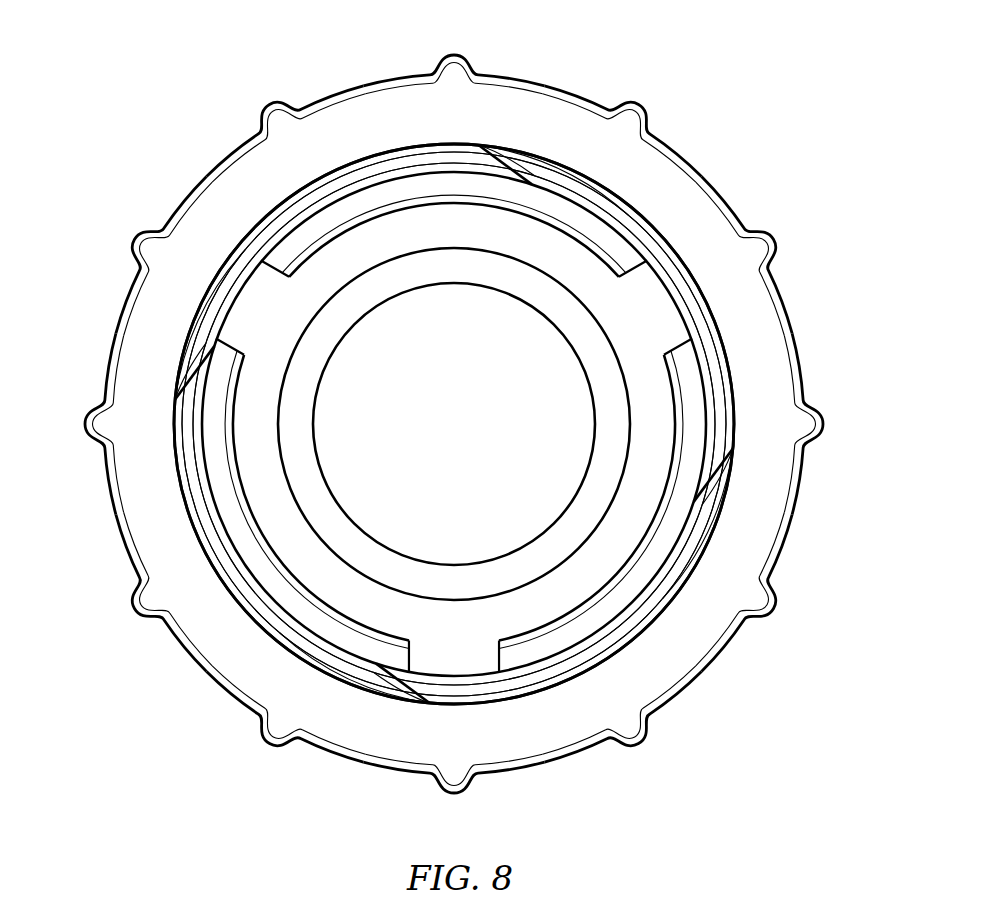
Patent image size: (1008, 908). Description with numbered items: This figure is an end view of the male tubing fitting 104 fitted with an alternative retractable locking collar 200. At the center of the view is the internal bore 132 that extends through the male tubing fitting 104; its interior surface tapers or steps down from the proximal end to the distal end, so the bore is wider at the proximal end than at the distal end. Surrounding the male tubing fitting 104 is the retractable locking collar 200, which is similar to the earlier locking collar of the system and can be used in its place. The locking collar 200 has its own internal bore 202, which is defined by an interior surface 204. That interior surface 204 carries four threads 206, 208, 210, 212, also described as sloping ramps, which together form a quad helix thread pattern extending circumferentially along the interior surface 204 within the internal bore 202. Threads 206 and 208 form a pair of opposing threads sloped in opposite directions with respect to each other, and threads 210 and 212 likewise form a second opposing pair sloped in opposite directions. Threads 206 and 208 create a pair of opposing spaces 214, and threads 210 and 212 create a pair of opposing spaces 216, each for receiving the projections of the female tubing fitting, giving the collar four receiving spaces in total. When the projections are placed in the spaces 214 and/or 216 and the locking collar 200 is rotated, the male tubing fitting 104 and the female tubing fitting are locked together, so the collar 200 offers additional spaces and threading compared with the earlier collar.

The retractable locking collar 200 is at (594, 97).
The internal bore 202 is at (656, 435).
The interior surface 204 is at (703, 545).
The thread 206 is at (673, 268).
The thread 208 is at (253, 602).
The thread 210 is at (303, 205).
The thread 212 is at (647, 610).
The spaces 214 is at (702, 320).
The spaces 216 is at (360, 172).
The male tubing fitting 104 is at (296, 332).
The internal bore 132 is at (476, 438).